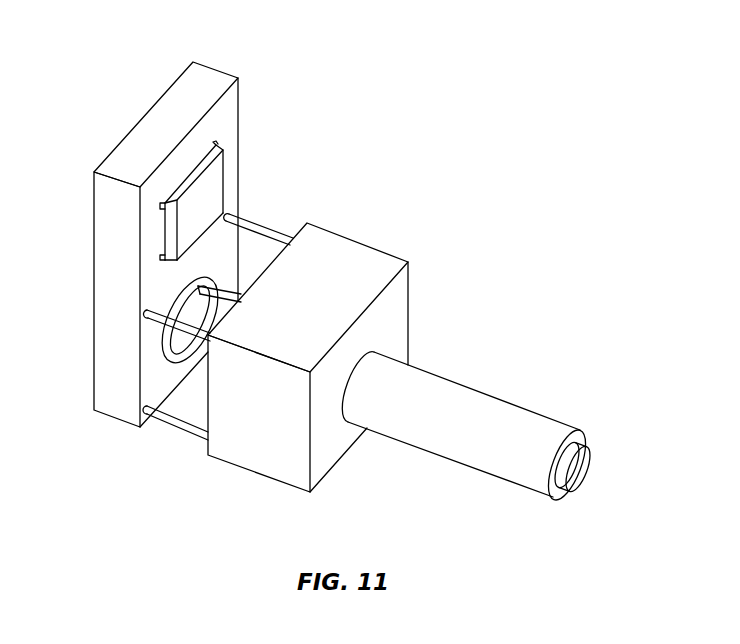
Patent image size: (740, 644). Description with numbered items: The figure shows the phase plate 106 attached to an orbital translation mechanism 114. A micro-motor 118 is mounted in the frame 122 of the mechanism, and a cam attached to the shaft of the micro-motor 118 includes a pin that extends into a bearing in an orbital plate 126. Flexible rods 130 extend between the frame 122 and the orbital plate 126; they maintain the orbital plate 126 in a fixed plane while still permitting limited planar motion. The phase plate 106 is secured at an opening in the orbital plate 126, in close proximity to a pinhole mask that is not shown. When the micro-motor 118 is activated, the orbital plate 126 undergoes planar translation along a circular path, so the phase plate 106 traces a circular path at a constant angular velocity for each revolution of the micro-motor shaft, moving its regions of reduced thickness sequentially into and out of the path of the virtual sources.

The orbital plate 126 is at (232, 120).
The phase plate 106 is at (208, 180).
The flexible rods 130 is at (257, 223).
The frame 122 is at (367, 267).
The micro-motor 118 is at (518, 415).
The orbital translation mechanism 114 is at (432, 158).